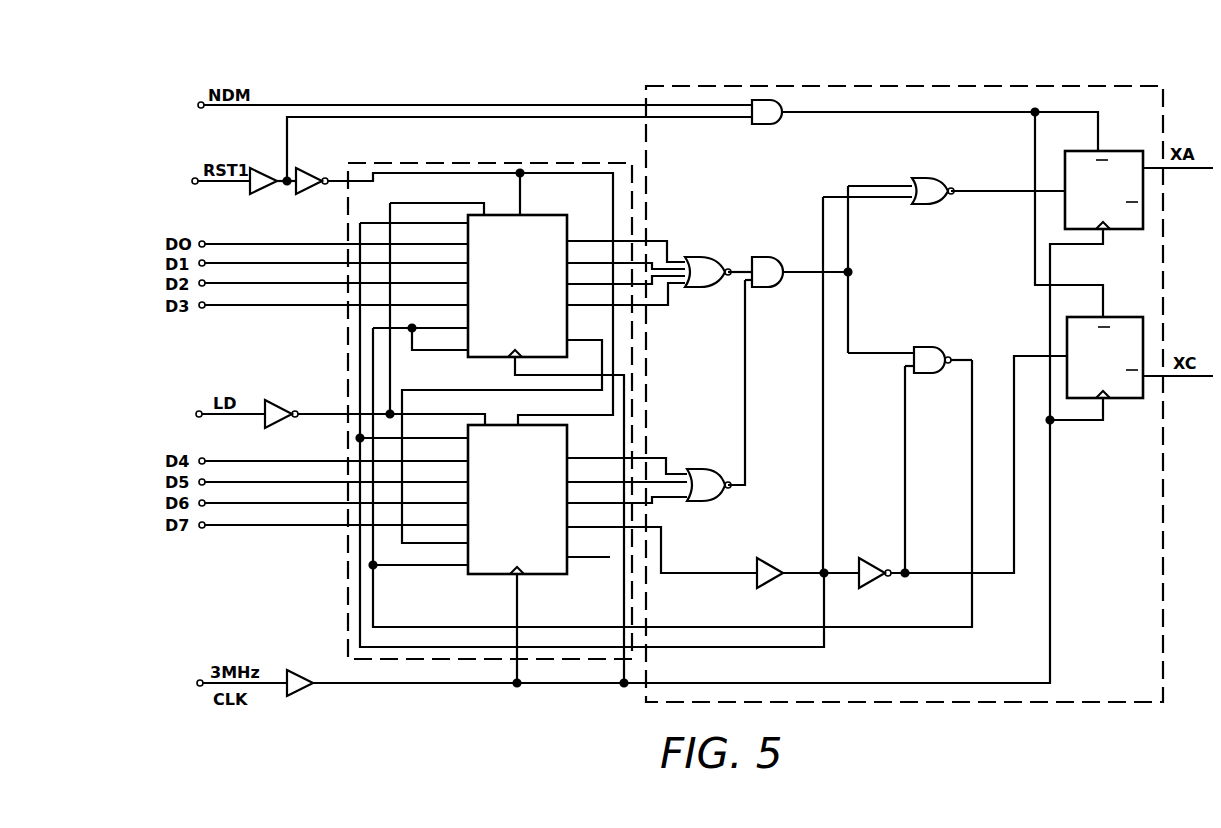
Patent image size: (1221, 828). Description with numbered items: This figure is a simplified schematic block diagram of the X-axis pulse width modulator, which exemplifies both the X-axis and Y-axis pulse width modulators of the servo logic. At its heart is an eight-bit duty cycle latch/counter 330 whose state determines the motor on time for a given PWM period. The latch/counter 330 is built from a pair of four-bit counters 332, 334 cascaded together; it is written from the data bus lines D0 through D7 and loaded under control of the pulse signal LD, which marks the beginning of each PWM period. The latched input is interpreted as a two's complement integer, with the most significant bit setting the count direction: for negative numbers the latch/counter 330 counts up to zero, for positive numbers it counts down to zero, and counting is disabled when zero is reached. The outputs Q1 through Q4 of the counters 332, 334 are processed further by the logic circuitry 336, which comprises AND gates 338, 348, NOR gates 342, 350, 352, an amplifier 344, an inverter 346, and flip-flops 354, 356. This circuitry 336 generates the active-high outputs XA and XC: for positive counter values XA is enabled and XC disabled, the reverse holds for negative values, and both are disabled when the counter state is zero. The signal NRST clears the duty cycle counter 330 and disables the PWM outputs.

The duty cycle latch/counter 330 is at (603, 163).
The 4-bit counter 332 is at (545, 215).
The 4-bit counter 334 is at (545, 574).
The logic circuitry 336 is at (1163, 108).
The AND gate 338 is at (758, 124).
The NOR gate 342 is at (705, 469).
The amplifier 344 is at (773, 558).
The inverter 346 is at (710, 257).
The AND gate 348 is at (787, 257).
The NOR gate 350 is at (930, 178).
The NOR gate 352 is at (940, 347).
The flip-flop 354 is at (1128, 151).
The flip-flop 356 is at (1115, 317).